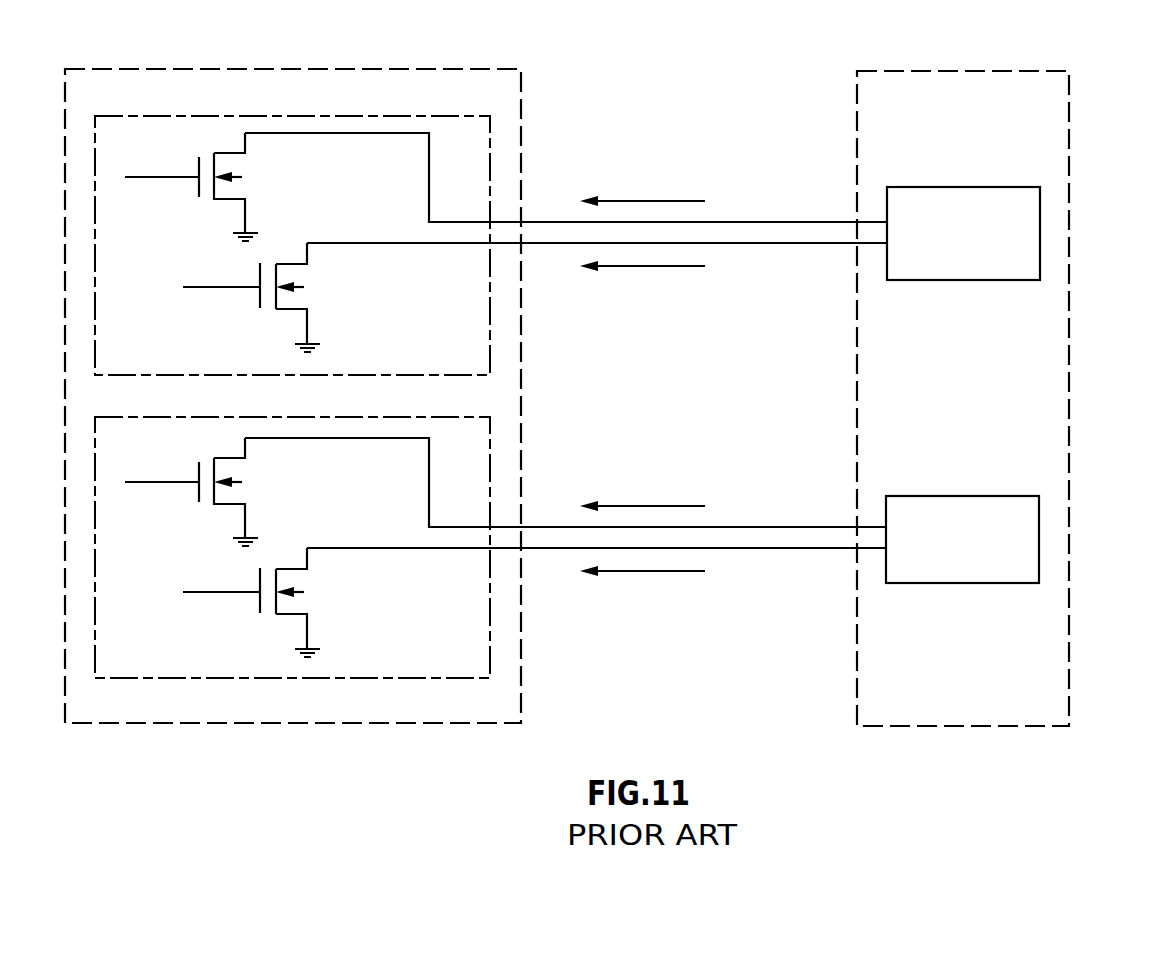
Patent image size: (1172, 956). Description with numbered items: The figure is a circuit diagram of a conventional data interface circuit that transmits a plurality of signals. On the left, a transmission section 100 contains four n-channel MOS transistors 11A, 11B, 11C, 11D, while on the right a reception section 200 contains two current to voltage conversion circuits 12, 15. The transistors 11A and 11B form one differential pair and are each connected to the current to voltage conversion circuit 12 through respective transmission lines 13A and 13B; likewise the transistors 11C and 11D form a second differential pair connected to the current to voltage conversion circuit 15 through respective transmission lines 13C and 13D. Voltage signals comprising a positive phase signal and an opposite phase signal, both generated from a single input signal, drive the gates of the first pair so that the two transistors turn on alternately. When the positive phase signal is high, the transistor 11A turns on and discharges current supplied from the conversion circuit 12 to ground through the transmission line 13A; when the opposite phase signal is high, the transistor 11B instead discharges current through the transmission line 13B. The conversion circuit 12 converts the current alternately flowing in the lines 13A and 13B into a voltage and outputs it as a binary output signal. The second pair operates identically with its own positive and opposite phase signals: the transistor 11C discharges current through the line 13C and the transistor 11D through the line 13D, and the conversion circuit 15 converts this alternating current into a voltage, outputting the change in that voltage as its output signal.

The transmission section 100 is at (532, 73).
The reception section 200 is at (1078, 78).
The n-channel MOS transistor 11A is at (243, 178).
The n-channel MOS transistor 11B is at (305, 288).
The n-channel MOS transistor 11C is at (243, 483).
The n-channel MOS transistor 11D is at (305, 593).
The current to voltage conversion circuit 12 is at (965, 187).
The current to voltage conversion circuit 15 is at (965, 496).
The transmission line 13A is at (736, 222).
The transmission line 13B is at (737, 244).
The transmission line 13C is at (736, 527).
The transmission line 13D is at (737, 549).